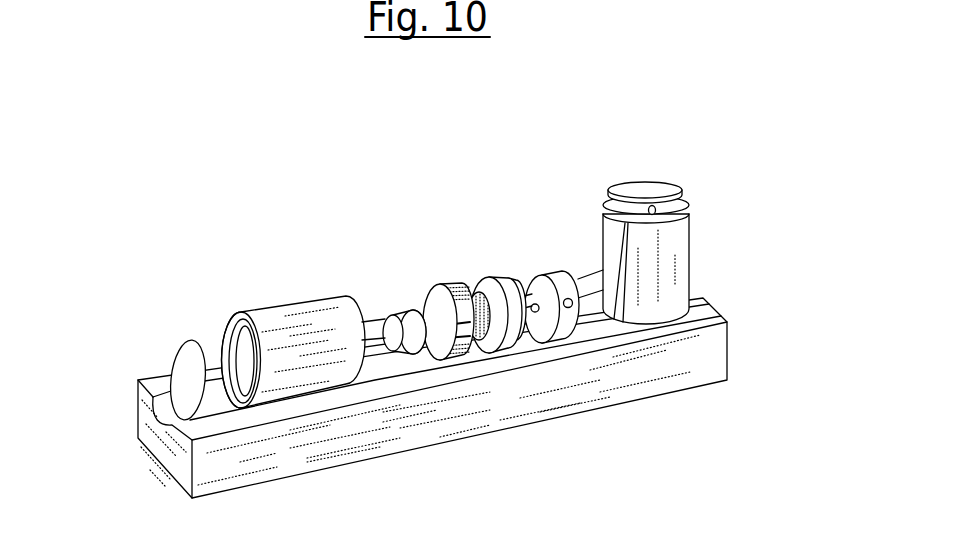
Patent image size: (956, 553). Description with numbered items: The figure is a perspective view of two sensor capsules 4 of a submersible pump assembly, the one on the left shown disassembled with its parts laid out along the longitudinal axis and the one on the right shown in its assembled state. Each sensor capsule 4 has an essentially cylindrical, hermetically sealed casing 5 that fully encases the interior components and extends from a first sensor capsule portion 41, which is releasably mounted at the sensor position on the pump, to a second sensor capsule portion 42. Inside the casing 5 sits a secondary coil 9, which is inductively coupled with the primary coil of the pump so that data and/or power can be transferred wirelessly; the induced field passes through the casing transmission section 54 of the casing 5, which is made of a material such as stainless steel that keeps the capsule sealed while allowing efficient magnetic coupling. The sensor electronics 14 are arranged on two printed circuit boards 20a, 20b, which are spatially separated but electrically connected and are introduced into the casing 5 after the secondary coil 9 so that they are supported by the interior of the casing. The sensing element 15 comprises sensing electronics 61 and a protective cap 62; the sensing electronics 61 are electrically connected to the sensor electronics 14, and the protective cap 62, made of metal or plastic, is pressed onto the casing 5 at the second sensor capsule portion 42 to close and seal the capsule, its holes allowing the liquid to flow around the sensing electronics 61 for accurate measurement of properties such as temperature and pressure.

The sensor capsule 4 is at (146, 293).
The casing 5 is at (278, 306).
The secondary coil 9 is at (378, 324).
The sensor electronics 14 is at (405, 248).
The sensing element 15 is at (652, 191).
The printed circuit board 20a is at (400, 294).
The printed circuit board 20b is at (430, 287).
The first sensor capsule portion 41 is at (714, 315).
The second sensor capsule portion 42 is at (706, 192).
The casing transmission section 54 is at (174, 344).
The sensing electronics 61 is at (488, 280).
The protective cap 62 is at (553, 274).